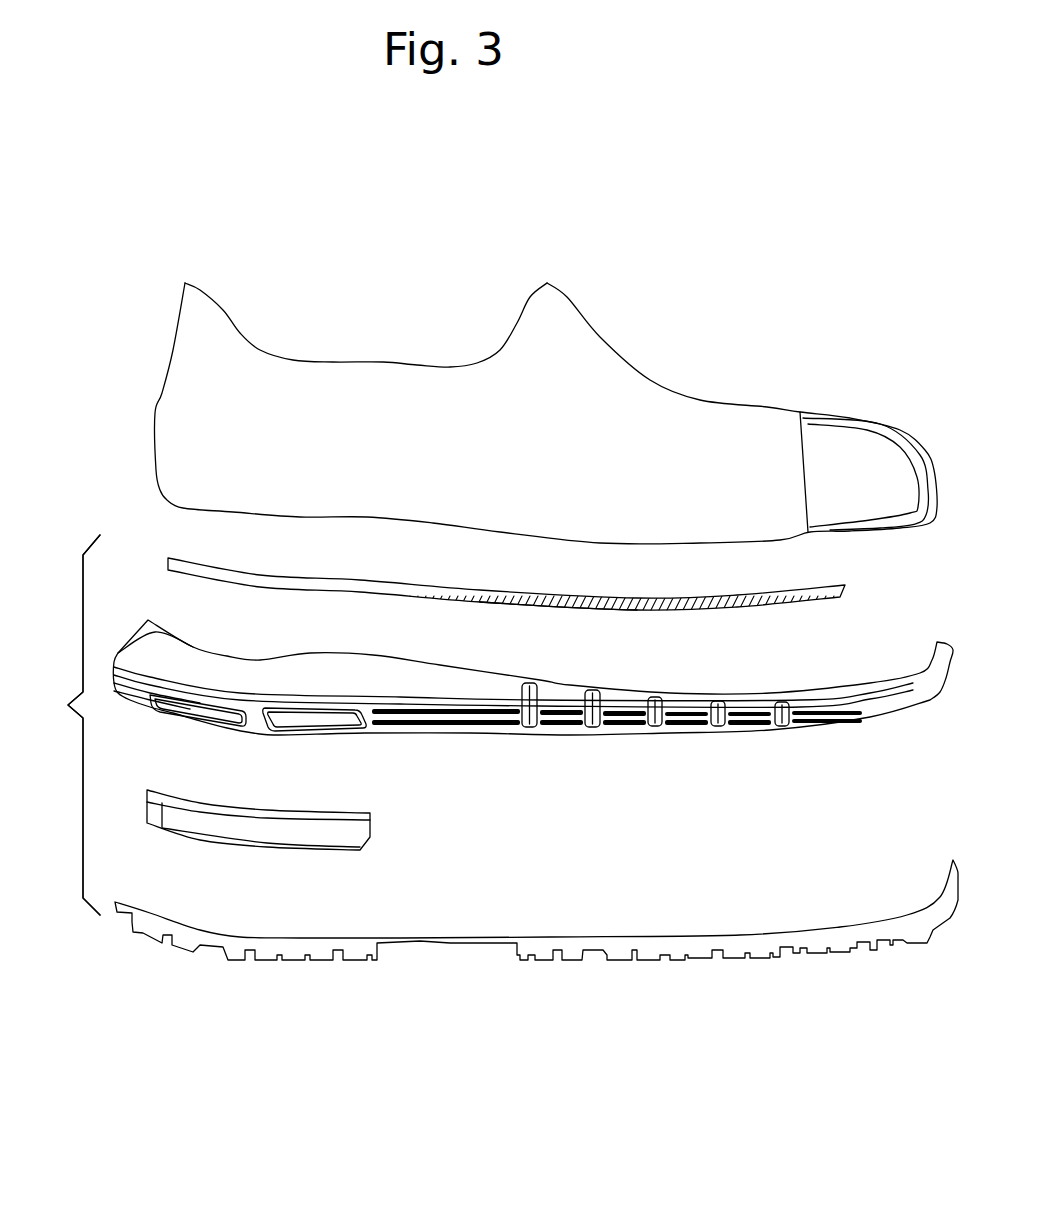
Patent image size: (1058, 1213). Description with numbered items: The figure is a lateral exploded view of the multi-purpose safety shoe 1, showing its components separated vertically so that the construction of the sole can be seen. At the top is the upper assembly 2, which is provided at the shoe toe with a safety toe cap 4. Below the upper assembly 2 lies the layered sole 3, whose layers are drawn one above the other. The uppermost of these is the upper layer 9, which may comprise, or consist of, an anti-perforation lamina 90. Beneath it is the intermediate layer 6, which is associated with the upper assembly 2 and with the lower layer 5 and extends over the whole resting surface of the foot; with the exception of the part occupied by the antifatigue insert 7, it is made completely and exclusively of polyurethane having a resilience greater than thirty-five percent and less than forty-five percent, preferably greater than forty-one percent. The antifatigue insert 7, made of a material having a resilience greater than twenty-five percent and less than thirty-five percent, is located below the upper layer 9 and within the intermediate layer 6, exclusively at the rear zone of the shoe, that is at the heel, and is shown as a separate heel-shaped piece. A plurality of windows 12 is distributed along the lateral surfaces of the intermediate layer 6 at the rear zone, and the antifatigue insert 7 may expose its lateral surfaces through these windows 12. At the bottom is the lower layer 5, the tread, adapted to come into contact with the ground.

The multi-purpose safety shoe 1 is at (107, 271).
The upper assembly 2 is at (155, 413).
The layered sole 3 is at (72, 725).
The safety toe cap 4 is at (905, 447).
The lower layer 5 is at (940, 946).
The intermediate layer 6 is at (893, 723).
The antifatigue insert 7 is at (283, 808).
The upper layer 9 is at (158, 562).
The windows 12 is at (203, 714).
The anti-perforation lamina 90 is at (555, 603).